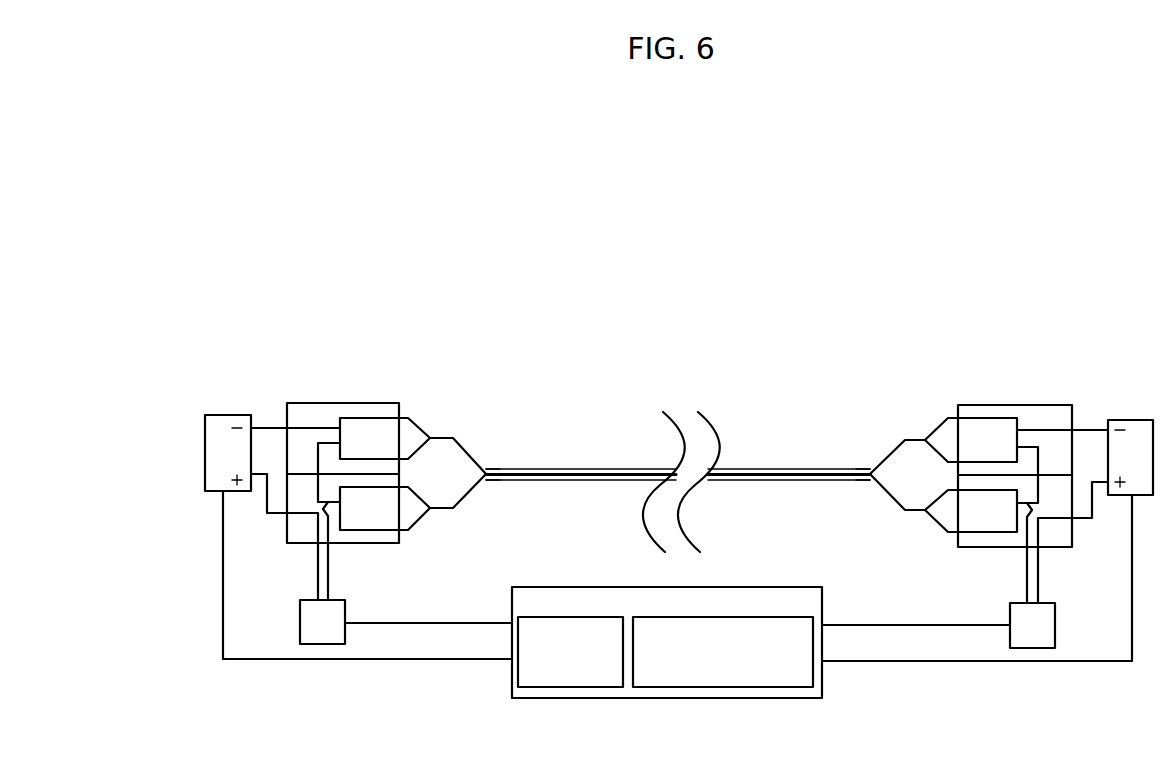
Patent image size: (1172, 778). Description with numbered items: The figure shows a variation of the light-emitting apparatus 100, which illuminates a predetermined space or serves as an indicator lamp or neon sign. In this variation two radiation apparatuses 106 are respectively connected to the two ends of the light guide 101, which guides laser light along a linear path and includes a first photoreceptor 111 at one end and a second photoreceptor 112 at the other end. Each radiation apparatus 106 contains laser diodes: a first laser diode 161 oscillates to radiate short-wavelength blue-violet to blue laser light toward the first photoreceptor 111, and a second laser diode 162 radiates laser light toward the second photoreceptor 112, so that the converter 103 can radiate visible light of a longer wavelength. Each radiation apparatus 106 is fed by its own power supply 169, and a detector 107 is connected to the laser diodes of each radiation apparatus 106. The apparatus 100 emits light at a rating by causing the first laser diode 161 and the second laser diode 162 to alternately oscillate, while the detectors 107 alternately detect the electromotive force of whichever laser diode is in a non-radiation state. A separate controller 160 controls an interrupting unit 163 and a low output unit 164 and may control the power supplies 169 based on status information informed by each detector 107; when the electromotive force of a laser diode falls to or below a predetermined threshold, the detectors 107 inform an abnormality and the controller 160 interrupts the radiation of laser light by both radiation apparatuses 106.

The light-emitting apparatus 100 is at (634, 266).
The light guide 101 is at (558, 468).
The converter 103 is at (757, 468).
The radiation apparatus 106 is at (312, 403).
The detector 107 is at (345, 607).
The first photoreceptor 111 is at (865, 468).
The second photoreceptor 112 is at (487, 468).
The controller 160 is at (590, 587).
The first laser diode 161 is at (930, 505).
The second laser diode 162 is at (427, 497).
The interrupting unit 163 is at (675, 688).
The low output unit 164 is at (590, 688).
The power supply 169 is at (222, 415).